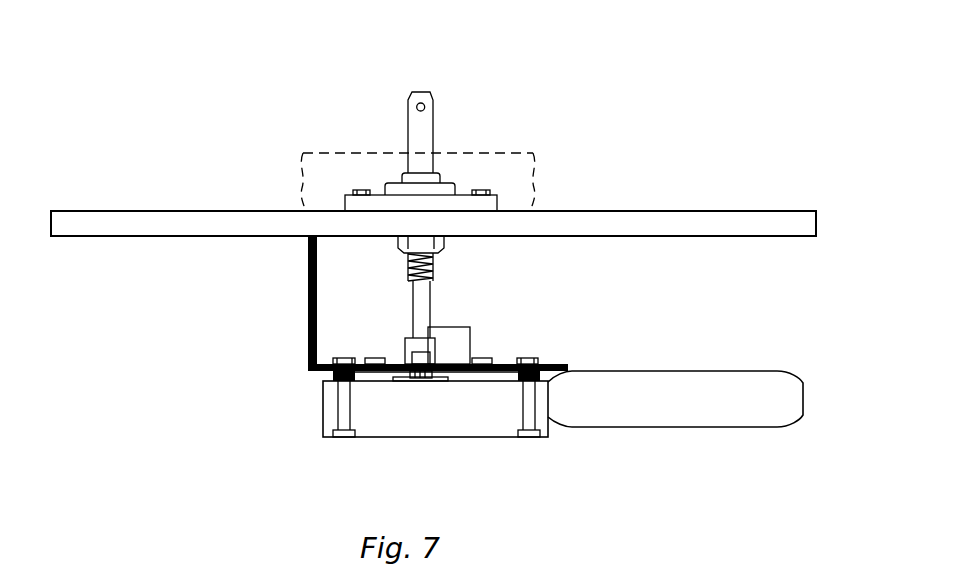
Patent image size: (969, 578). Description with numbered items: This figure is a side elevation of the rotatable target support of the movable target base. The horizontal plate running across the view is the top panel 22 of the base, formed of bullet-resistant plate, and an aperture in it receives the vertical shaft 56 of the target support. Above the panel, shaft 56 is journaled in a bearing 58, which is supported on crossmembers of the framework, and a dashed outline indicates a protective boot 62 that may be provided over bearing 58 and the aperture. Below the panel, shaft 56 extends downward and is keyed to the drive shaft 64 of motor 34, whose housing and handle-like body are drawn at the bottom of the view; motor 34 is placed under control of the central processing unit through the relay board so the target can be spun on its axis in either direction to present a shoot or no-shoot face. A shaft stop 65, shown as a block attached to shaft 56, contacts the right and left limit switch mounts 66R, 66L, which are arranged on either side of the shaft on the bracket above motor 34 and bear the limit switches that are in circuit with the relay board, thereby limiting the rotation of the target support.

The top panel 22 is at (672, 211).
The motor 34 is at (468, 418).
The shaft 56 is at (433, 115).
The bearing 58 is at (457, 190).
The protective boot 62 is at (534, 177).
The drive shaft 64 is at (422, 381).
The shaft stop 65 is at (448, 327).
The left limit switch mount 66L is at (375, 357).
The right limit switch mount 66R is at (480, 357).